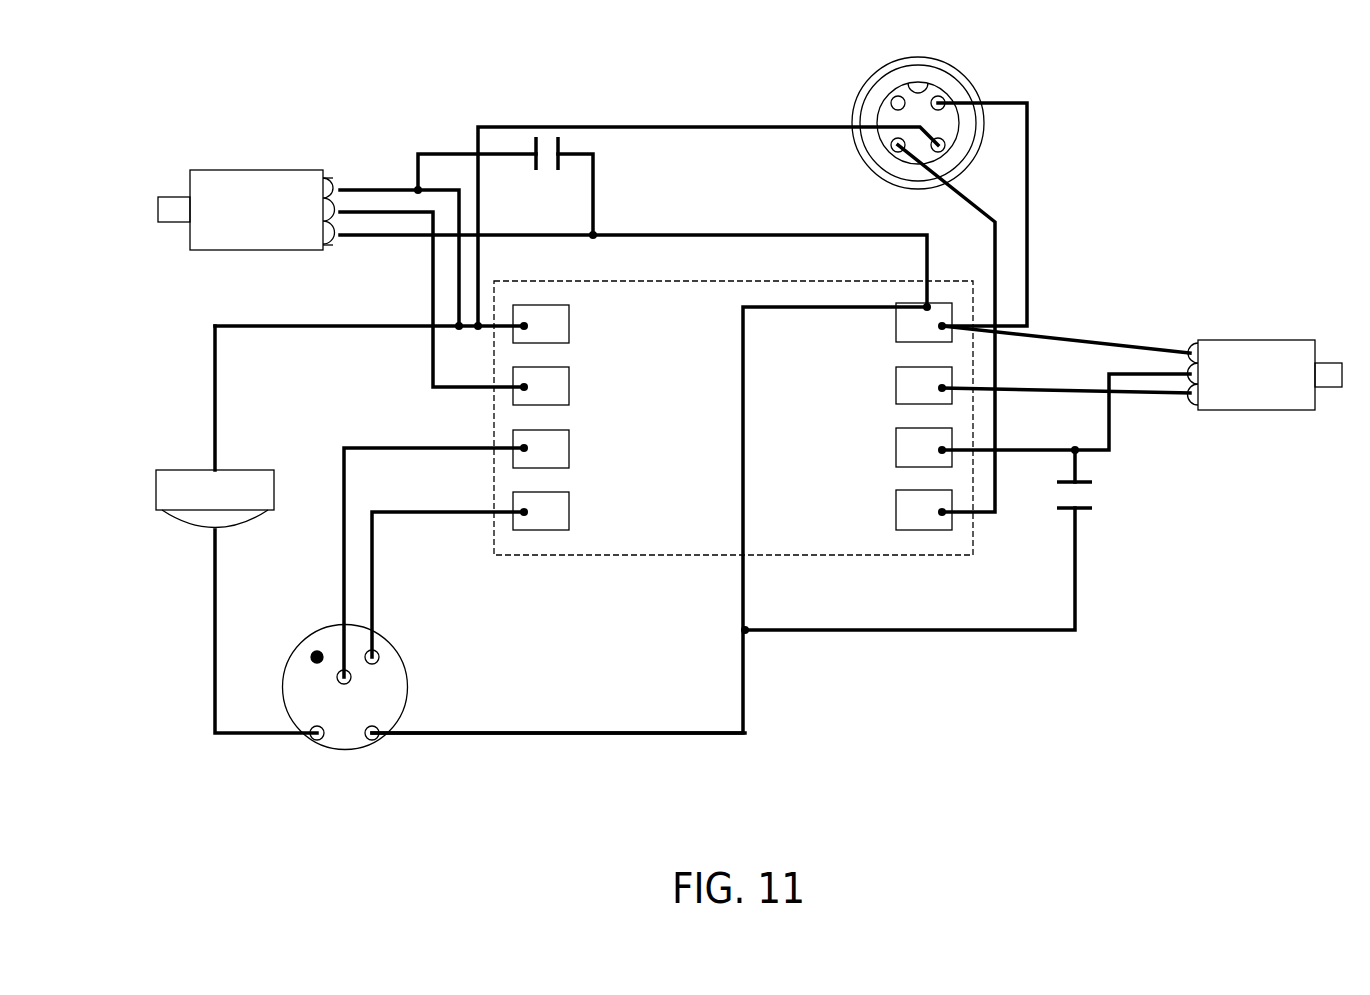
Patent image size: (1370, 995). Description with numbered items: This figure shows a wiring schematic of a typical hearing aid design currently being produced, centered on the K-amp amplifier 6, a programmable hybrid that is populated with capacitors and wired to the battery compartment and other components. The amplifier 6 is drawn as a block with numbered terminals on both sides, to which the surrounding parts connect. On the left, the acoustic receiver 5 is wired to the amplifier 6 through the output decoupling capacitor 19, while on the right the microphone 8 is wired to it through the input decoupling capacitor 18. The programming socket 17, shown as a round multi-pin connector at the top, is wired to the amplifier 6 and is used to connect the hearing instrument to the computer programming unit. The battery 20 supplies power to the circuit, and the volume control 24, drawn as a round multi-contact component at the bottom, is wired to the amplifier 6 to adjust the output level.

The acoustic receiver 5 is at (257, 203).
The K-amp amplifier 6 is at (715, 518).
The microphone 8 is at (1242, 367).
The programming socket 17 is at (958, 93).
The input decoupling capacitor 18 is at (1093, 498).
The output decoupling capacitor 19 is at (511, 148).
The battery 20 is at (198, 492).
The volume control 24 is at (308, 740).